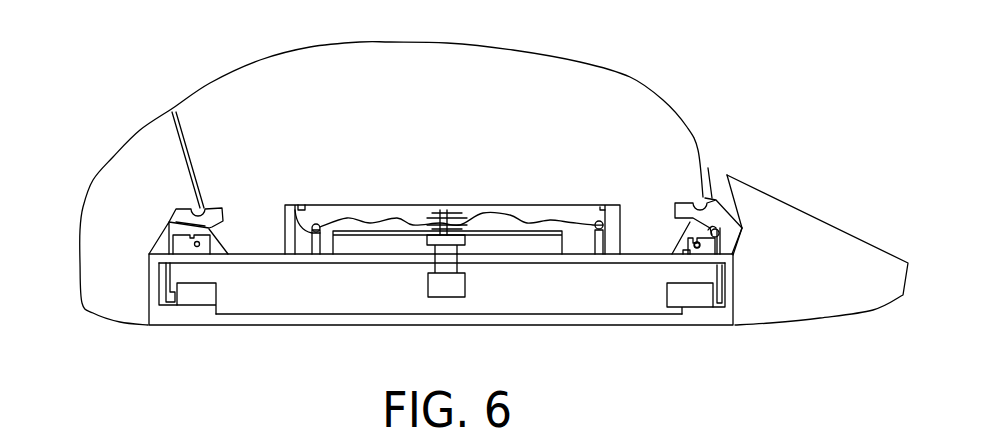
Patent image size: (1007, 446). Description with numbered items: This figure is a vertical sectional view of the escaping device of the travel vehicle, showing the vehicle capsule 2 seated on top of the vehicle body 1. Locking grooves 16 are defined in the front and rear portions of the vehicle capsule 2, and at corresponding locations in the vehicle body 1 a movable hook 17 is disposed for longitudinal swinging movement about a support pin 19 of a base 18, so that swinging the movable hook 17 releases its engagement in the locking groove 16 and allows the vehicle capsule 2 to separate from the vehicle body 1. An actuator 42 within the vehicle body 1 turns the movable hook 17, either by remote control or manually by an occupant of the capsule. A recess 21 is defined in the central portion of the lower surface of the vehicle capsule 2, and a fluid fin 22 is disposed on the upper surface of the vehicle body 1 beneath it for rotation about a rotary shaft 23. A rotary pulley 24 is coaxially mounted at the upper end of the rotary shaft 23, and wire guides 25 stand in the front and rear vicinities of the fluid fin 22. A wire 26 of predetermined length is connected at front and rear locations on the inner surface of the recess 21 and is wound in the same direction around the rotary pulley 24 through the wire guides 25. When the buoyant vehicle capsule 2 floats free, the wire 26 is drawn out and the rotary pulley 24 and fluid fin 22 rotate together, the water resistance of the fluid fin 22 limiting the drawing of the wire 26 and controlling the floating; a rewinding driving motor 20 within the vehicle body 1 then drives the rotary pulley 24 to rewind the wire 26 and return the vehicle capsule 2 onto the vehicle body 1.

The vehicle body 1 is at (833, 235).
The vehicle capsule 2 is at (578, 67).
The locking groove 16 is at (200, 210).
The movable hook 17 is at (180, 229).
The base 18 is at (690, 252).
The support pin 19 is at (699, 248).
The rewinding driving motor 20 is at (450, 293).
The recess 21 is at (298, 240).
The fluid fin 22 is at (392, 243).
The rotary shaft 23 is at (453, 252).
The rotary pulley 24 is at (445, 210).
The wire guide 25 is at (293, 205).
The wire 26 is at (527, 222).
The actuator 42 is at (195, 298).